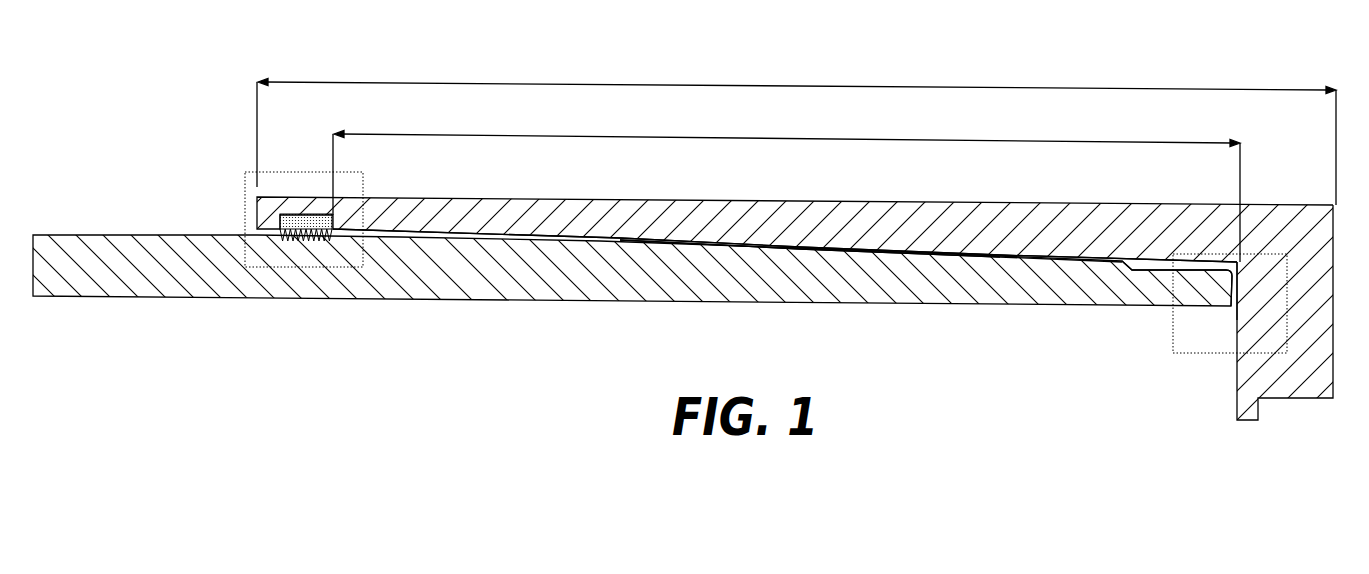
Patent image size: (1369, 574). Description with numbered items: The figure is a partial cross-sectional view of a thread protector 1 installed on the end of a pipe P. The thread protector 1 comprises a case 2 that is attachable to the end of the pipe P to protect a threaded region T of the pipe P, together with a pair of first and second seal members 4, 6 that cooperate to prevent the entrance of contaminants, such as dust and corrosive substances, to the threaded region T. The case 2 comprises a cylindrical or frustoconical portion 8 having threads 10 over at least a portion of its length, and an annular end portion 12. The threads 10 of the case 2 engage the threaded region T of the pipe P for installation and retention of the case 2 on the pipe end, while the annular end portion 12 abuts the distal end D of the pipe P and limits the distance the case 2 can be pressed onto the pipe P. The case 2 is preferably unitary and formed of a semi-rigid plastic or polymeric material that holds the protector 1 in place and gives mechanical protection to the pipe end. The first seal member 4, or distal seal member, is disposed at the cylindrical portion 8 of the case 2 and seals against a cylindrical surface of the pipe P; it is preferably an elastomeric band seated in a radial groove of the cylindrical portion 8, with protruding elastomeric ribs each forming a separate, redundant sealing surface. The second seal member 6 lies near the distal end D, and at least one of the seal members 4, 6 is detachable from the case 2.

The thread protector 1 is at (1160, 170).
The case 2 is at (1265, 205).
The first seal member 4 is at (285, 222).
The second seal member 6 is at (1237, 305).
The cylindrical or frustoconical portion 8 is at (1015, 232).
The threads 10 is at (1035, 257).
The annular end portion 12 is at (1303, 300).
The threaded region T is at (835, 247).
The pipe P is at (955, 282).
The distal end D is at (1212, 290).